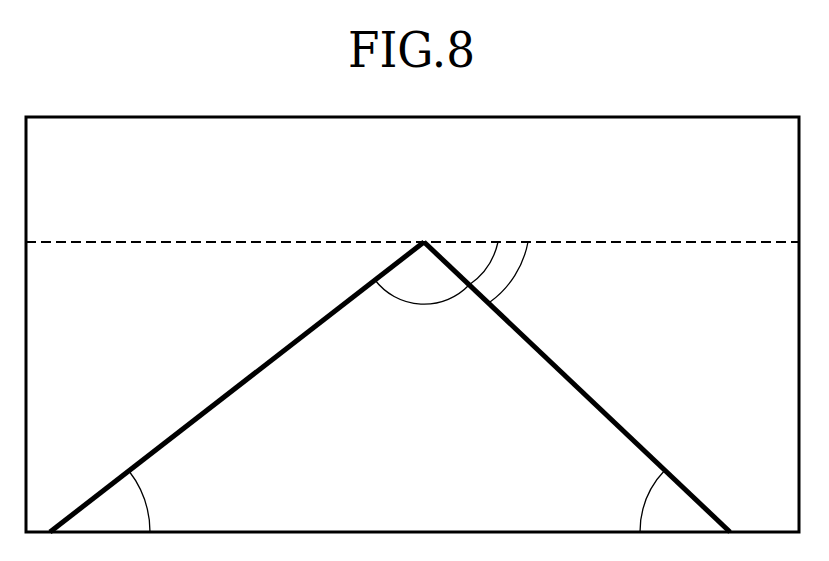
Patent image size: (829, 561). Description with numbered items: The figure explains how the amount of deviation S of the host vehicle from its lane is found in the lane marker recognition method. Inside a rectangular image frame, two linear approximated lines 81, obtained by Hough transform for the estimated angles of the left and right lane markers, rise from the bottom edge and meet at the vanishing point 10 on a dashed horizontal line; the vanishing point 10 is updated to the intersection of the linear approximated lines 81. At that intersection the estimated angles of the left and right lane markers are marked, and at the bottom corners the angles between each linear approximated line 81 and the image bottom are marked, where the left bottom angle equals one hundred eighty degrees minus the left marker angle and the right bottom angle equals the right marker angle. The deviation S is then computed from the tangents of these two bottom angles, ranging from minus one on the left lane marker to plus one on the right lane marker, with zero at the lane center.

The vanishing point 10 is at (424, 242).
The linear approximated lines 81 is at (243, 378).